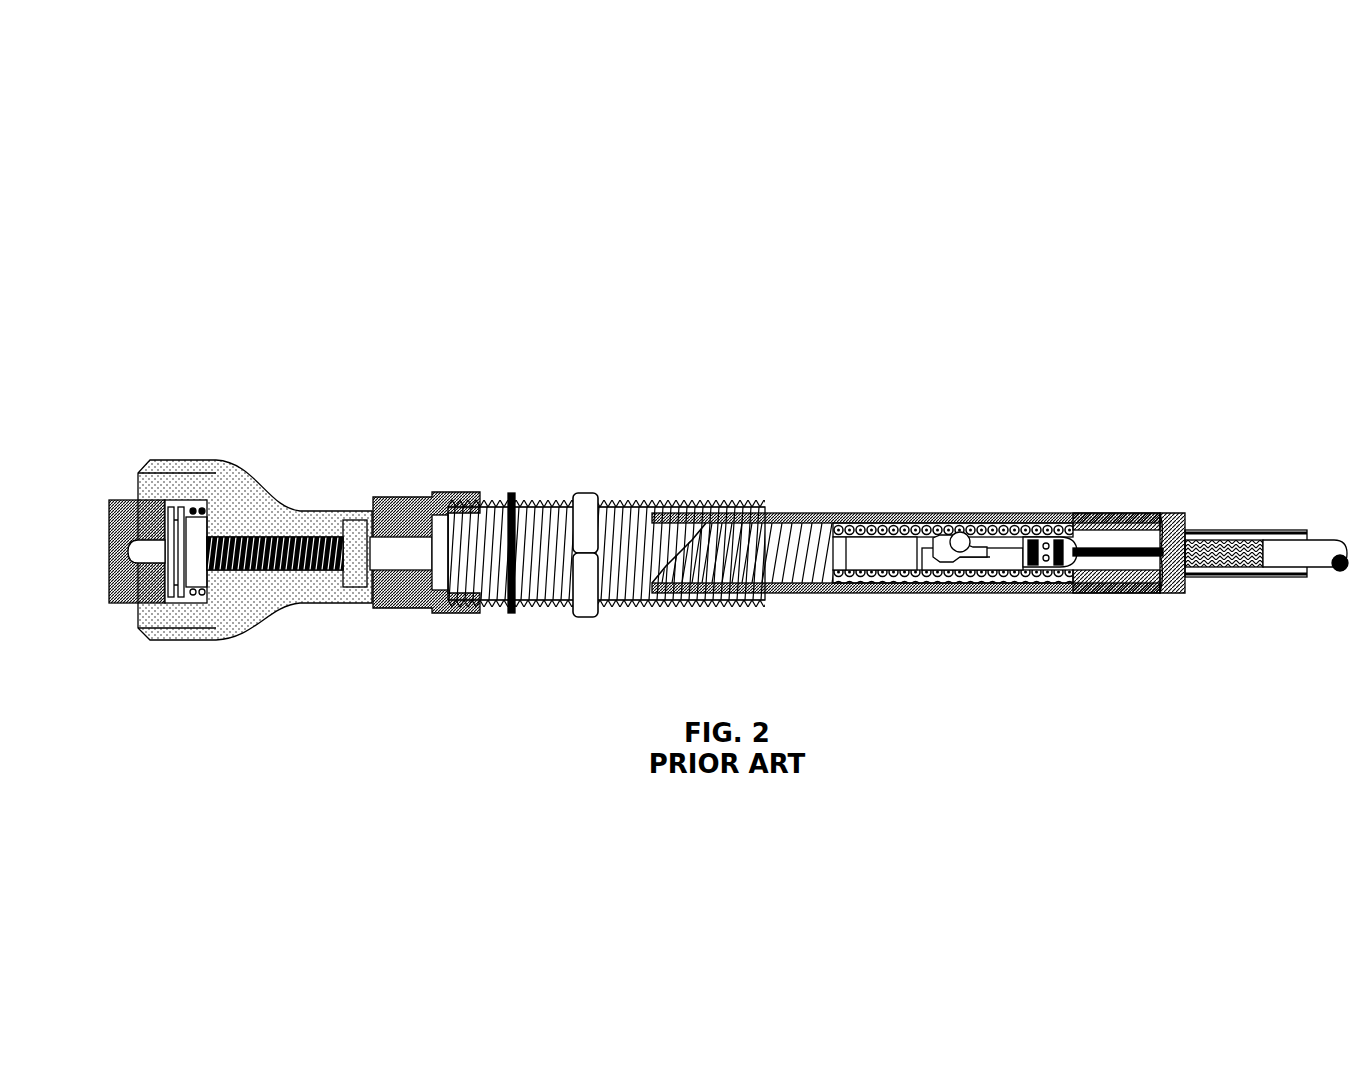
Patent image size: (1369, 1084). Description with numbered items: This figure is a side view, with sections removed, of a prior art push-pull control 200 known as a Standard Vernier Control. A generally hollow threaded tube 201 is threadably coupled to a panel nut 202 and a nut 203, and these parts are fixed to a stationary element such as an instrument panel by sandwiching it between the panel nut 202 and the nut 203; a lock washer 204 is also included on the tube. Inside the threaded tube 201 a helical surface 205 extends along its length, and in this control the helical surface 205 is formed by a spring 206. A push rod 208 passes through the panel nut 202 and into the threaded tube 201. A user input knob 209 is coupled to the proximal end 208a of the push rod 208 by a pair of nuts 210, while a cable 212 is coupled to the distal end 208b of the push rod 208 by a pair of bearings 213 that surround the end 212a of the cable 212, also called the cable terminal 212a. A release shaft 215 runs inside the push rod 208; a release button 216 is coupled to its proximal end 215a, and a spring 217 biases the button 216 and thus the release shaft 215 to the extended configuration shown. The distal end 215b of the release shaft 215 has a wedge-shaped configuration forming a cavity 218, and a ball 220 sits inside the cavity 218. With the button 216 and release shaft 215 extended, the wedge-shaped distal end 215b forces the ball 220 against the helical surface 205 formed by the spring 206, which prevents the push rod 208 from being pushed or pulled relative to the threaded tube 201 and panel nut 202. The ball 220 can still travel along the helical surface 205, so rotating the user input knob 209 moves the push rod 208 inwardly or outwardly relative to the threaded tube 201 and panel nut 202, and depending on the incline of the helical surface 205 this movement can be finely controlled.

The push-pull control 200 is at (776, 270).
The threaded tube 201 is at (490, 500).
The panel nut 202 is at (398, 497).
The nut 203 is at (578, 495).
The lock washer 204 is at (512, 497).
The helical surface 205 is at (827, 522).
The spring 206 is at (780, 518).
The push rod 208 is at (397, 556).
The proximal end of the push rod 208a is at (264, 522).
The distal end of the push rod 208b is at (1078, 572).
The user input knob 209 is at (227, 477).
The pair of nuts 210 is at (350, 577).
The cable 212 is at (1108, 547).
The cable terminal 212a is at (1053, 578).
The pair of bearings 213 is at (1058, 522).
The release shaft 215 is at (145, 558).
The proximal end of the release shaft 215a is at (147, 530).
The distal end of the release shaft 215b is at (967, 576).
The release button 216 is at (115, 510).
The spring 217 is at (176, 597).
The cavity 218 is at (942, 522).
The ball 220 is at (960, 522).